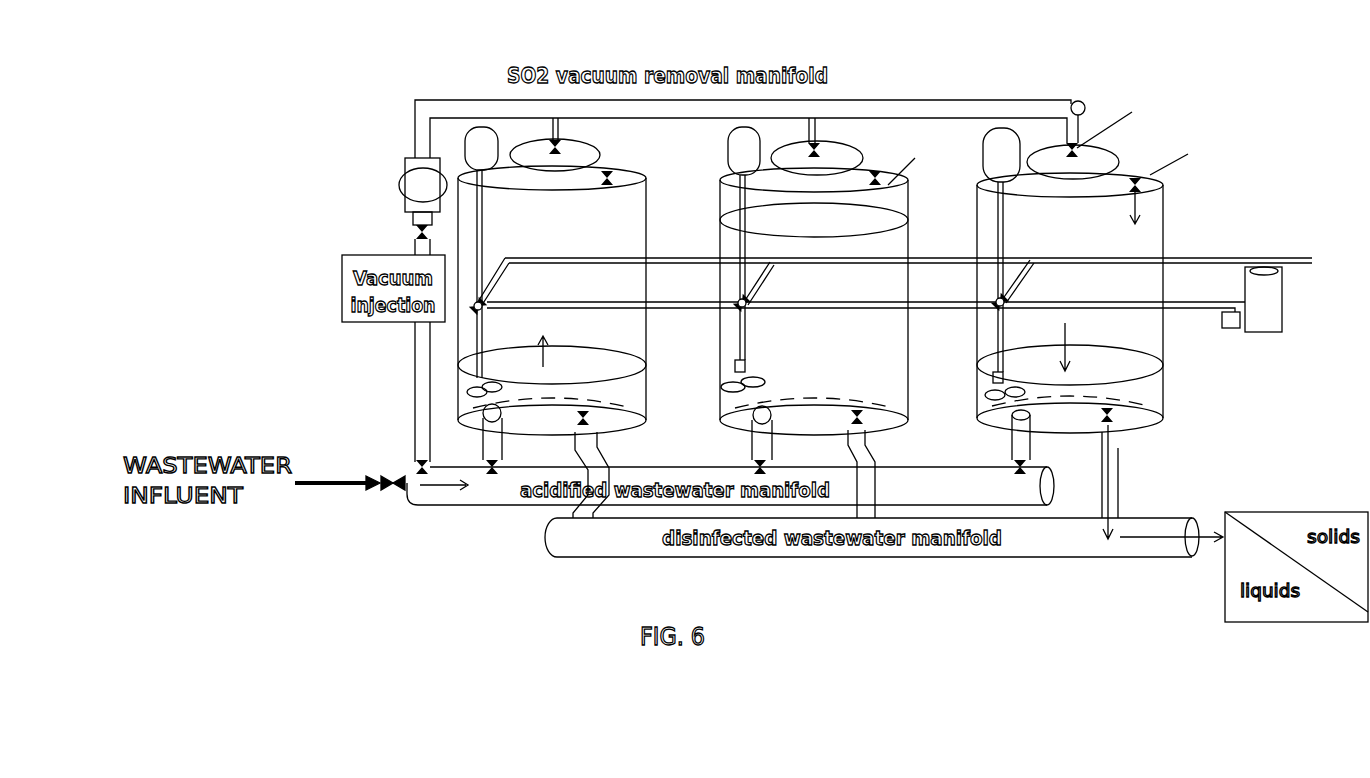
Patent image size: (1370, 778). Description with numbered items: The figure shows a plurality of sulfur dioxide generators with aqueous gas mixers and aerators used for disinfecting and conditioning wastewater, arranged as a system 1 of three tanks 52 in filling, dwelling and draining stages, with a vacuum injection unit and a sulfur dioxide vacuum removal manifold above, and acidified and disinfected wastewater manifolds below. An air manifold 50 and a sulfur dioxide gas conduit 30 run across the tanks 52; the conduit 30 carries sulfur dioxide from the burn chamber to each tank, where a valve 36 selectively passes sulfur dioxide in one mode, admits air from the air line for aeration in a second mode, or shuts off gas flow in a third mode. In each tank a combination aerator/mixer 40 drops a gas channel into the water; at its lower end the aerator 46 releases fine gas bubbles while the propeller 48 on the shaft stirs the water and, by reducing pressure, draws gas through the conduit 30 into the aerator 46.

The wastewater treatment system 1 is at (1315, 317).
The sulfur dioxide gas conduit 30 is at (1170, 308).
The valve 36 is at (735, 312).
The combination aerator/mixer 40 is at (475, 147).
The aerator 46 is at (735, 363).
The propeller 48 is at (997, 390).
The air manifold 50 is at (1197, 258).
The treatment tank 52 is at (730, 245).